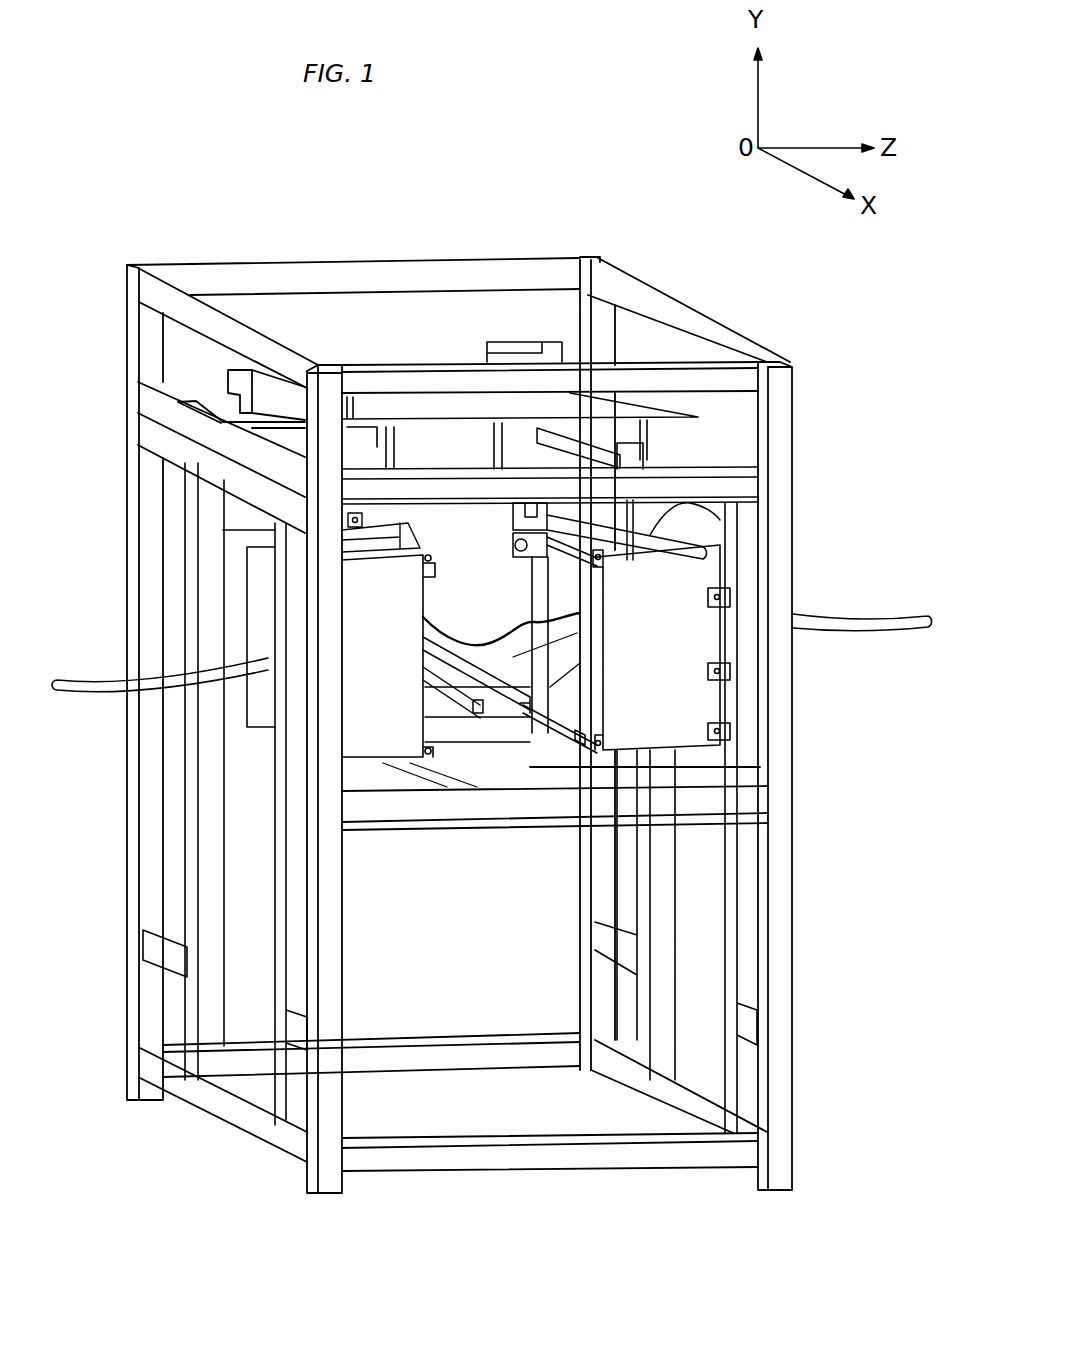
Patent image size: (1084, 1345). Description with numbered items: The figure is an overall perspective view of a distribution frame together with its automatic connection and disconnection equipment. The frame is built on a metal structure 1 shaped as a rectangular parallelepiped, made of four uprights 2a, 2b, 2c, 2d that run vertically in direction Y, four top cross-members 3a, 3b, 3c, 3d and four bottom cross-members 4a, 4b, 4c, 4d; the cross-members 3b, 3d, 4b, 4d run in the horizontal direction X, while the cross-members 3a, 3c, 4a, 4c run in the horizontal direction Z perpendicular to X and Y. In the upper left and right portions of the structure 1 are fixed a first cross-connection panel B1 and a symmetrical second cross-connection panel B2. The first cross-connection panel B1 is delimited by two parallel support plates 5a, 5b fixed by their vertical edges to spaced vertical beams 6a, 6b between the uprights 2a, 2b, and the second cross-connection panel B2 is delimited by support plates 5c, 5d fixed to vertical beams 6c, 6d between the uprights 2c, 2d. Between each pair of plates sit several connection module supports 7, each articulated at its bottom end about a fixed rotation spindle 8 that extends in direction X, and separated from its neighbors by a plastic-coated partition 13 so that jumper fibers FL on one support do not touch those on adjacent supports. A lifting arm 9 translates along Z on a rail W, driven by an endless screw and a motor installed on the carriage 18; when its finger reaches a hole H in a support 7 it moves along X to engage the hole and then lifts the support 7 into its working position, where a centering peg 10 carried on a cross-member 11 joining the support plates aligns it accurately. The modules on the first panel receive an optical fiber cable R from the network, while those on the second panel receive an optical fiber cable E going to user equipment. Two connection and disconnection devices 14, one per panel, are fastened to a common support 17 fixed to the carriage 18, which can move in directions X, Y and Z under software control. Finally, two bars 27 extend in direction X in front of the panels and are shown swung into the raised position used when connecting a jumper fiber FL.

The metal structure 1 is at (622, 196).
The upright 2a is at (131, 323).
The upright 2b is at (333, 1186).
The upright 2c is at (563, 292).
The upright 2d is at (788, 1137).
The top cross-member 3a is at (351, 276).
The top cross-member 3b is at (227, 312).
The top cross-member 3c is at (691, 363).
The top cross-member 3d is at (630, 283).
The bottom cross-member 4a is at (400, 1064).
The bottom cross-member 4b is at (237, 1117).
The bottom cross-member 4c is at (558, 1160).
The bottom cross-member 4d is at (650, 1089).
The support plate 5a is at (215, 548).
The support plate 5b is at (367, 738).
The support plate 5c is at (534, 617).
The support plate 5d is at (703, 692).
The vertical beam 6a is at (192, 1058).
The vertical beam 6b is at (283, 1115).
The vertical beam 6c is at (667, 895).
The vertical beam 6d is at (737, 978).
The connection module support 7 is at (657, 535).
The fixed rotation spindle 8 is at (595, 729).
The lifting arm 9 is at (624, 519).
The centering peg 10 is at (367, 537).
The cross-member 11 is at (603, 568).
The partition 13 is at (402, 534).
The connection and disconnection device 14 is at (513, 547).
The common support 17 is at (512, 446).
The carriage 18 is at (388, 405).
The bars 27 is at (515, 700).
The rail W is at (583, 446).
The hole H is at (722, 558).
The first cross-connection panel B1 is at (208, 609).
The second cross-connection panel B2 is at (710, 562).
The optical fiber cable E is at (873, 628).
The optical fiber cable R is at (70, 692).
The jumper fiber FL is at (452, 630).